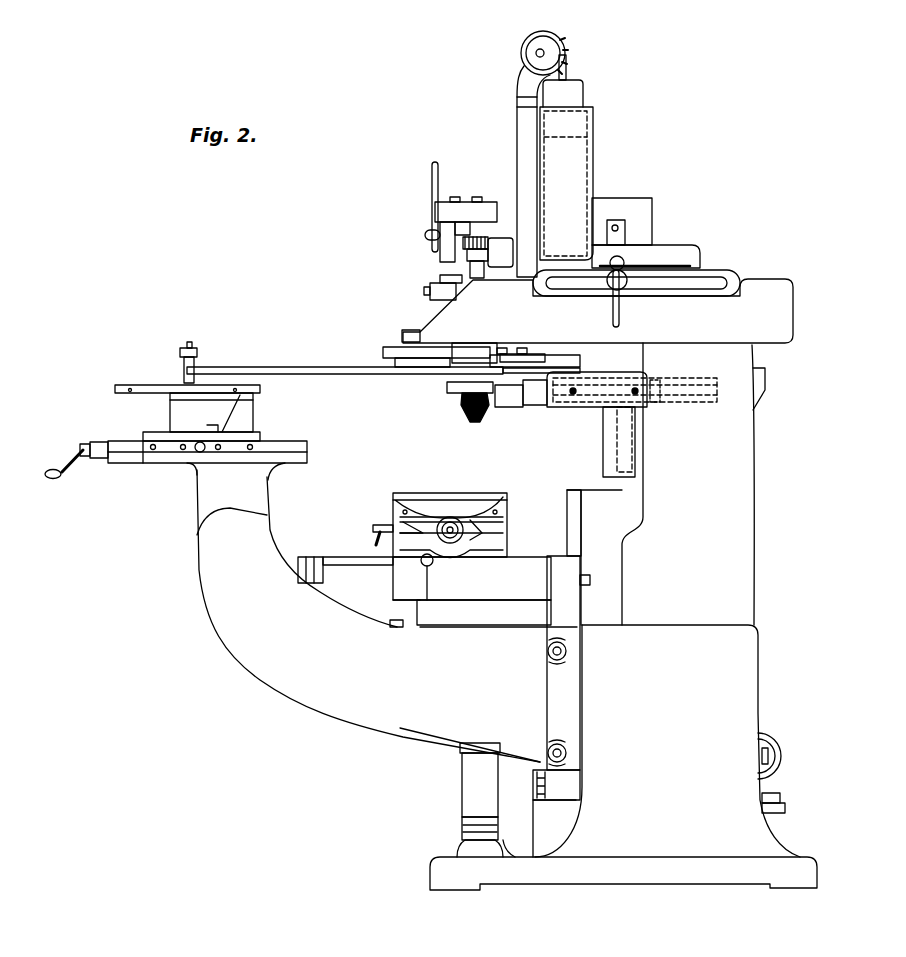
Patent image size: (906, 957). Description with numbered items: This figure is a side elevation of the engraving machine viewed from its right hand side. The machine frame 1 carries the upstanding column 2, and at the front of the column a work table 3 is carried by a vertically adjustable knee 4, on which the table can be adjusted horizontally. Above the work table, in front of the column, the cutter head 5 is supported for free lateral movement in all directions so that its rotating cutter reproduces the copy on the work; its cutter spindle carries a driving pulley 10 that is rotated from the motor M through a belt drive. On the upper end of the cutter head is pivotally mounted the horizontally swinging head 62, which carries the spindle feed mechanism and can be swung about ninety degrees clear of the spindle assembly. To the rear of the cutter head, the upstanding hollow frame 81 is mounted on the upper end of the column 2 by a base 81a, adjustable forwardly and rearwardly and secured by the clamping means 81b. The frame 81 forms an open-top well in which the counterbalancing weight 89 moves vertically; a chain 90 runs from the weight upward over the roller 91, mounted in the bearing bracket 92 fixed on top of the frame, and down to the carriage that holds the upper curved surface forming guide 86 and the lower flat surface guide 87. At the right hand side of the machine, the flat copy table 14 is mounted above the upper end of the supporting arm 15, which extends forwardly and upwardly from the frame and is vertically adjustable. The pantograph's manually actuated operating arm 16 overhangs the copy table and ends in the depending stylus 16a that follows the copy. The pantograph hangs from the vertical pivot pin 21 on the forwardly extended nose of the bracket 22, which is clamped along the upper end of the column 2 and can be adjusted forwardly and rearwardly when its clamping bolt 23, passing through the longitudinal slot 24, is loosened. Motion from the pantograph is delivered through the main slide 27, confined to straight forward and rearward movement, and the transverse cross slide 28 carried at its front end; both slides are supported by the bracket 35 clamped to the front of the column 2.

The machine frame 1 is at (618, 866).
The column 2 is at (743, 453).
The work table 3 is at (463, 503).
The knee 4 is at (311, 529).
The cutter head 5 is at (473, 357).
The driving pulley 10 is at (487, 417).
The pattern holder table 14 is at (120, 395).
The supporting arm 15 is at (248, 642).
The operating arm 16 is at (331, 373).
The stylus 16a is at (185, 383).
The pivot pin 21 is at (417, 320).
The bracket 22 is at (480, 282).
The clamping bolt 23 is at (630, 282).
The longitudinal slot 24 is at (720, 277).
The main slide 27 is at (685, 399).
The cross slide 28 is at (512, 403).
The bracket 35 is at (607, 445).
The swinging head 62 is at (450, 247).
The frame 81 is at (583, 170).
The base 81a is at (665, 257).
The clamping means 81b is at (618, 227).
The curved surface forming guide 86 is at (458, 276).
The flat surface guide 87 is at (448, 302).
The counterbalance weight 89 is at (583, 90).
The chain 90 is at (567, 76).
The roller 91 is at (556, 48).
The bearing bracket 92 is at (527, 86).
The motor M is at (772, 752).